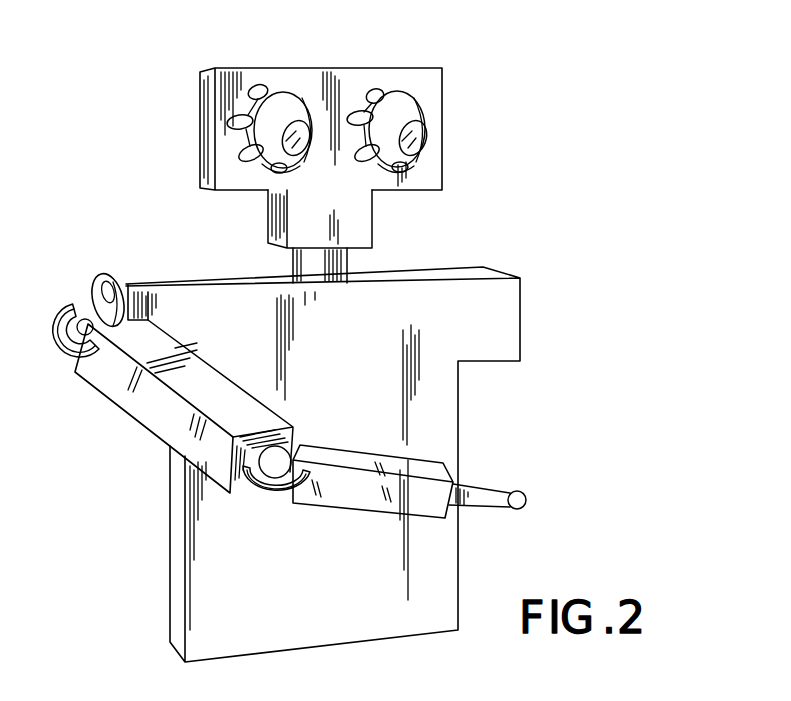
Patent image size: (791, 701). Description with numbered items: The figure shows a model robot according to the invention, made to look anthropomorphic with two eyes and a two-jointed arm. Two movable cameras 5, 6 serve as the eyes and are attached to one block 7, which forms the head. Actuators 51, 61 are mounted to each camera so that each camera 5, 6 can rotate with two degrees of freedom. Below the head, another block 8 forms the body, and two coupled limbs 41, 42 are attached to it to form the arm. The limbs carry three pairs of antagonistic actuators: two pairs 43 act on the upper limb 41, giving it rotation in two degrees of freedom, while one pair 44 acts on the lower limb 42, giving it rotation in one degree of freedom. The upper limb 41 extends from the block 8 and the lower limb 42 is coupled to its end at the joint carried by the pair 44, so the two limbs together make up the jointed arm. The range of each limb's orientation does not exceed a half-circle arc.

The movable camera 5 is at (292, 103).
The movable camera 6 is at (398, 105).
The block 7 is at (250, 72).
The block 8 is at (349, 377).
The upper limb 41 is at (115, 391).
The lower limb 42 is at (427, 467).
The pair of antagonistic actuators 43 is at (85, 317).
The pair of antagonistic actuators 44 is at (267, 487).
The actuators 51 is at (238, 153).
The actuators 61 is at (377, 92).